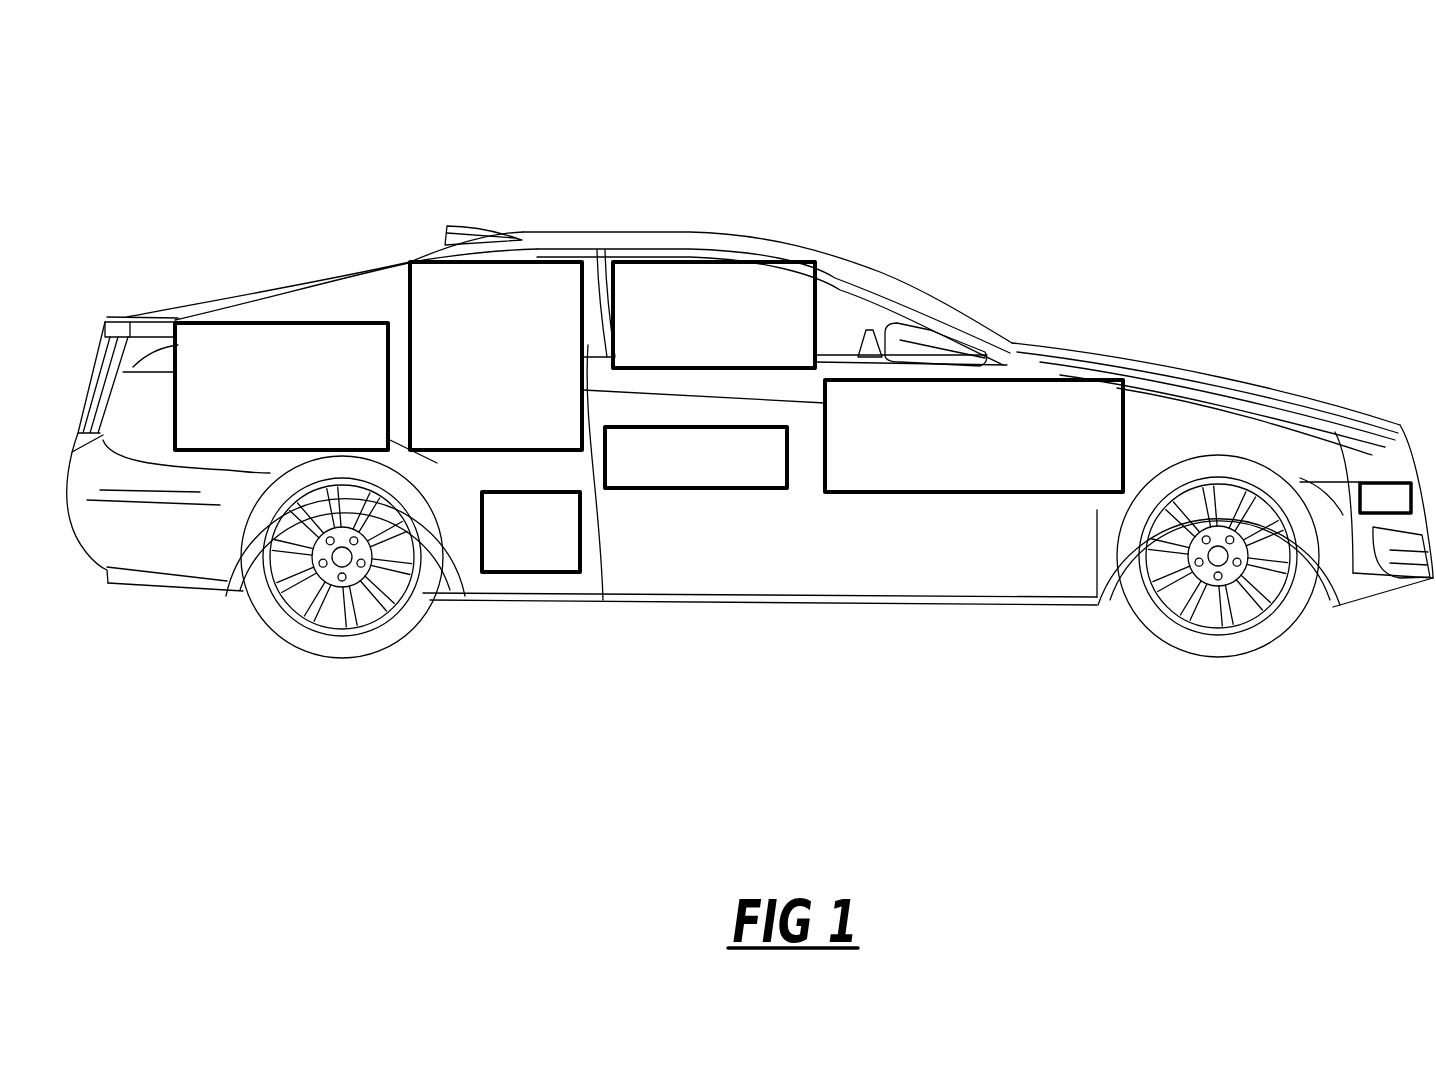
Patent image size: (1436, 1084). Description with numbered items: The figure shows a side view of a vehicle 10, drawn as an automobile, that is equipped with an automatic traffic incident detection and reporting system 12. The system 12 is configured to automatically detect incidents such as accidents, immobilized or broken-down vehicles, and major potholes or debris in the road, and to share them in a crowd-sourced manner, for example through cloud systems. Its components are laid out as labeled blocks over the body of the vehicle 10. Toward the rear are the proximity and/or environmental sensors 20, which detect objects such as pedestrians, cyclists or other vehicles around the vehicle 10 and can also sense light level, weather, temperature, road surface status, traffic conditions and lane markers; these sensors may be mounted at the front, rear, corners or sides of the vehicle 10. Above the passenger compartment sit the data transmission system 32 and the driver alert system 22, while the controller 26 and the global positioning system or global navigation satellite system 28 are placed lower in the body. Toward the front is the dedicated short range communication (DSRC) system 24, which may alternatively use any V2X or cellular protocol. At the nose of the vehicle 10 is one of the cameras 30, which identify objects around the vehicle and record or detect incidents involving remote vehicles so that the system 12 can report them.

The vehicle 10 is at (390, 128).
The automatic traffic incident detection and reporting system 12 is at (1032, 294).
The proximity and/or environmental sensors 20 is at (307, 323).
The driver alert system 22 is at (817, 302).
The dedicated short range communication (DSRC) system 24 is at (1123, 425).
The controller 26 is at (613, 487).
The global positioning system (GPS) or global navigation satellite system (GNSS) 28 is at (530, 572).
The cameras 30 is at (1365, 515).
The data transmission system 32 is at (556, 262).